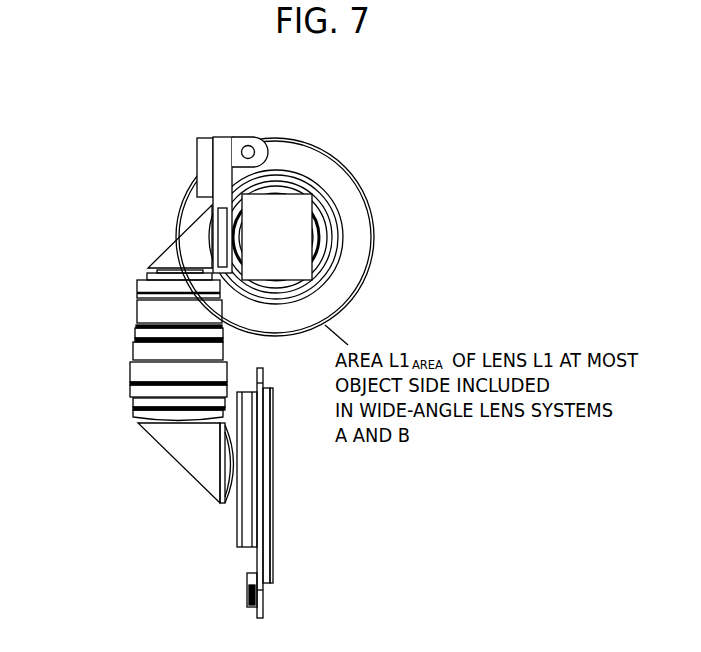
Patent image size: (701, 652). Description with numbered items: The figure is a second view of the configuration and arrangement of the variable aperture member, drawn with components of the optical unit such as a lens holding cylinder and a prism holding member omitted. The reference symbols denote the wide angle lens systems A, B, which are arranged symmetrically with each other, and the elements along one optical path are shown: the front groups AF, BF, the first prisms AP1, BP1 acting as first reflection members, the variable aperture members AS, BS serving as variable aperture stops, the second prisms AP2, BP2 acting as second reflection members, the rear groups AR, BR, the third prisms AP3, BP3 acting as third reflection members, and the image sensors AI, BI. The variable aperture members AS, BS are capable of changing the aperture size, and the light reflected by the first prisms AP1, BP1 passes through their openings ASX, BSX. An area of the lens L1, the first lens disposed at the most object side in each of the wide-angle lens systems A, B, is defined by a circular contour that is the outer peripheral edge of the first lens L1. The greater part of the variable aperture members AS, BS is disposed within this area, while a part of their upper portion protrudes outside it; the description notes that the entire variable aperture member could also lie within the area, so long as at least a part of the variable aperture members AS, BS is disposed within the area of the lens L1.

The wide-angle lens systems A, B is at (120, 155).
The holding member / stop AS, BS is at (225, 148).
The front lens frame AF, BF is at (336, 148).
The first lens L1 is at (353, 202).
The first prism AP1, BP1 is at (303, 237).
The aperture stop ASX, BSX is at (222, 230).
The second prism AP2, BP2 is at (175, 262).
The lens barrel AR, BR is at (127, 330).
The third prism AP3, BP3 is at (182, 450).
The image sensor AI, BI is at (238, 460).